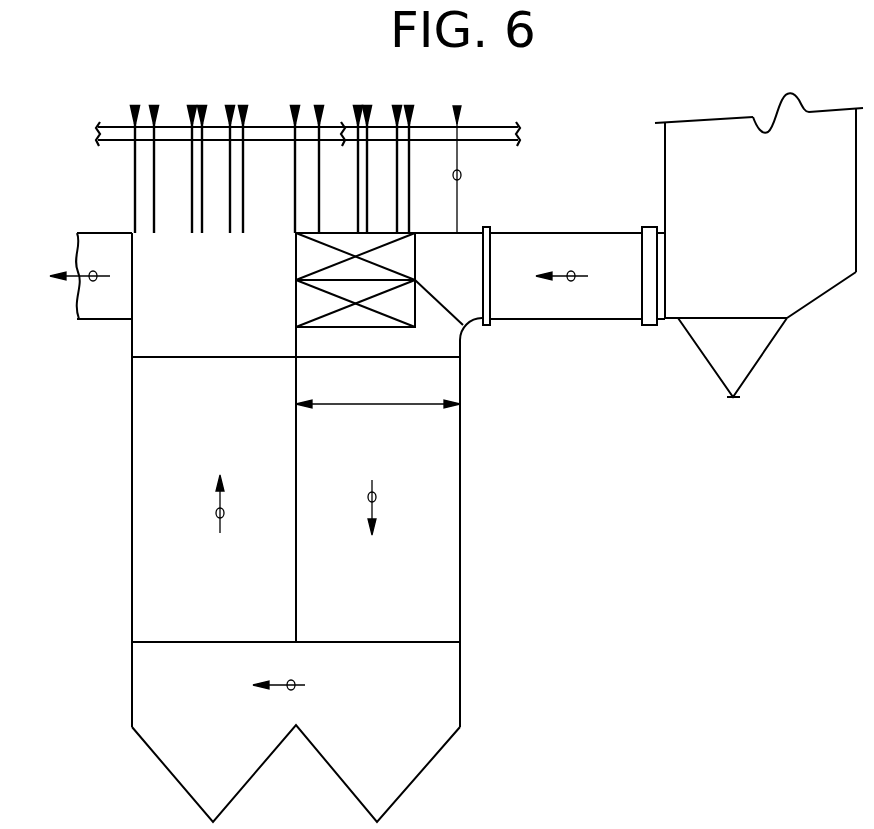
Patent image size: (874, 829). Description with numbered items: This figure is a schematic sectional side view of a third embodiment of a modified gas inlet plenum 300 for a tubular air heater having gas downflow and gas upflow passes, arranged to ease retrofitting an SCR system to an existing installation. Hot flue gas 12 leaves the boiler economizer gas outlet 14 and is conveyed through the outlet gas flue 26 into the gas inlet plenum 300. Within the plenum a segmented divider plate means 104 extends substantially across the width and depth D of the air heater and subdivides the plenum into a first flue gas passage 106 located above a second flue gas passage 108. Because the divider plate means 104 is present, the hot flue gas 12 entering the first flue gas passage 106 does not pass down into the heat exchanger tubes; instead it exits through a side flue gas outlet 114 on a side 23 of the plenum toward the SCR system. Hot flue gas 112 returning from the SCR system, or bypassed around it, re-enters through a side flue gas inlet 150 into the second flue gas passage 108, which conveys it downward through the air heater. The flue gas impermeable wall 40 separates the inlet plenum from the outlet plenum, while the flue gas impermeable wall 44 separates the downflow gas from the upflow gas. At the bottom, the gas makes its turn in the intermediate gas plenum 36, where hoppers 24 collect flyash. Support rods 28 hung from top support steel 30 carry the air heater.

The hot flue gas 12 is at (575, 276).
The boiler economizer gas outlet 14 is at (769, 235).
The side wall 23 is at (450, 340).
The hopper 24 is at (430, 752).
The outlet gas flue 26 is at (538, 248).
The support rods 28 is at (465, 175).
The top support steel 30 is at (483, 130).
The intermediate gas plenum 36 is at (451, 690).
The flue gas impermeable wall 40 is at (296, 345).
The flue gas impermeable wall 44 is at (296, 448).
The divider plate means 104 is at (443, 302).
The first flue gas passage 106 is at (455, 246).
The second flue gas passage 108 is at (397, 346).
The hot flue gas 112 is at (90, 276).
The side flue gas outlet 114 is at (296, 258).
The side flue gas inlet 150 is at (296, 306).
The gas inlet plenum 300 is at (548, 432).